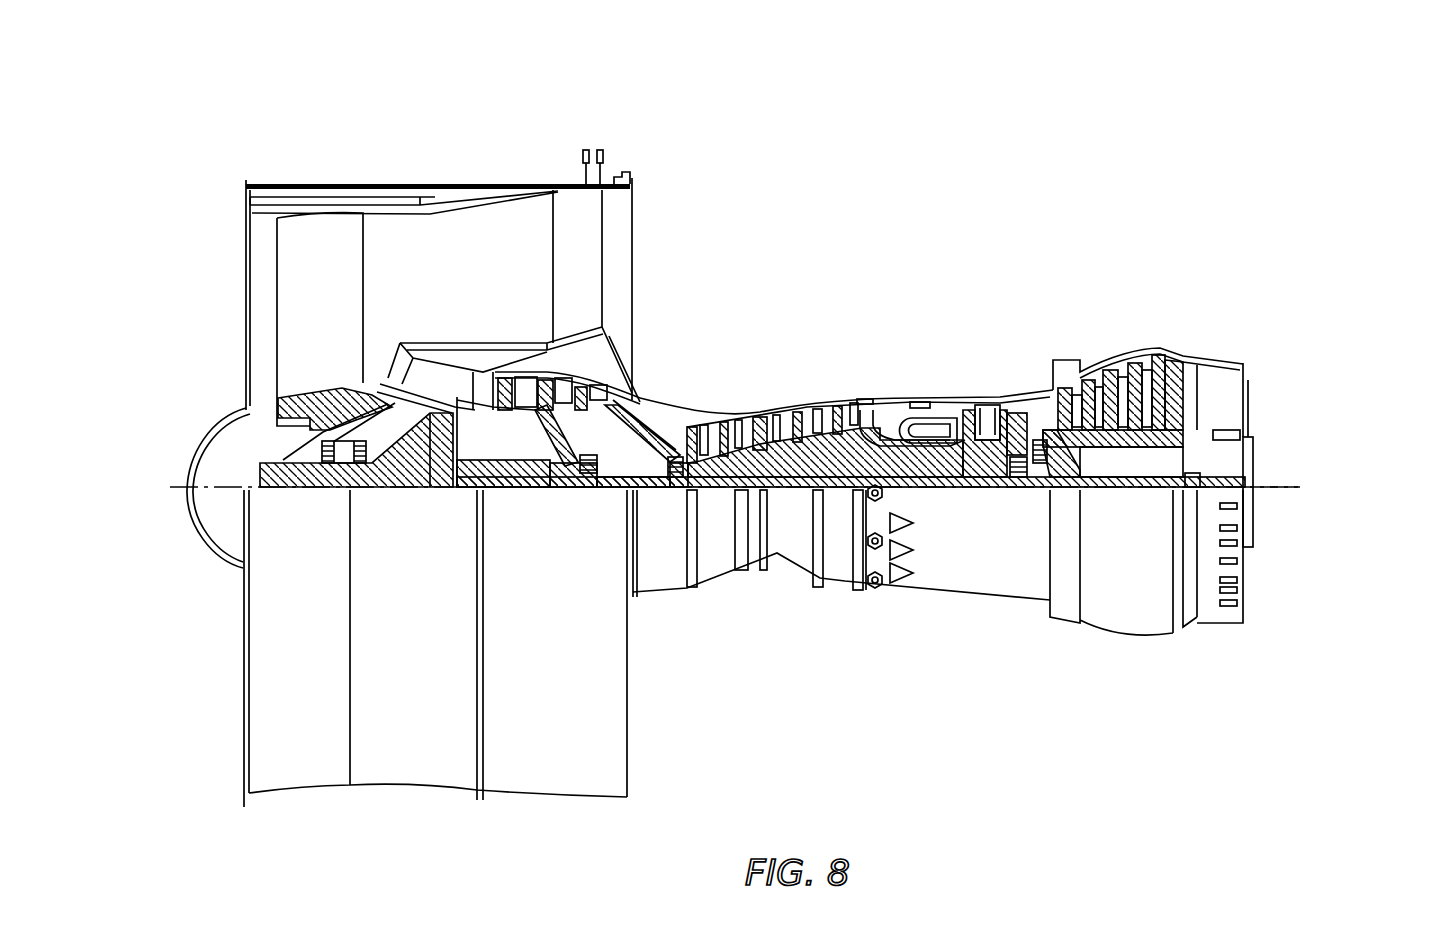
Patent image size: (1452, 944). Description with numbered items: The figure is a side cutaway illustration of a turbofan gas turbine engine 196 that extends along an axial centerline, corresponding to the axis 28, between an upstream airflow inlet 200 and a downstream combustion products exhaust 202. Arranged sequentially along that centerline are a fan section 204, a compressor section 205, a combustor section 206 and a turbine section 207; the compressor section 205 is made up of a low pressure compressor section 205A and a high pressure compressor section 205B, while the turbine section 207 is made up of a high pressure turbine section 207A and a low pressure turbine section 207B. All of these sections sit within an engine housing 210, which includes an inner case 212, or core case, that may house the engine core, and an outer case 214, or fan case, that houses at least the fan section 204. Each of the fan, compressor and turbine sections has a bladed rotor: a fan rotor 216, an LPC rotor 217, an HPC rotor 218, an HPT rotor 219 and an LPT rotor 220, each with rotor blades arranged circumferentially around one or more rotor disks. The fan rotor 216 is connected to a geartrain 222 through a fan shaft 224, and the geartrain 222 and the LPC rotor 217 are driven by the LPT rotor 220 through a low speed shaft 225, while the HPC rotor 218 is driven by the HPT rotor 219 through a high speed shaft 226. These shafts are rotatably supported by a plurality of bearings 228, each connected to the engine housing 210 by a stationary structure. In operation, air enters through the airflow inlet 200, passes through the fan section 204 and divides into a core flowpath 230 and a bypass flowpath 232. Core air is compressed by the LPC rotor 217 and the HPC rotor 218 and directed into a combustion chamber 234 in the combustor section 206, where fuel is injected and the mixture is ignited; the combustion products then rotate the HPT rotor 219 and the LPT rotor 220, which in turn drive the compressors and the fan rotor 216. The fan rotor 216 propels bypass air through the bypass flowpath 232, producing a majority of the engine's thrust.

The turbofan gas turbine engine 196 is at (168, 126).
The airflow inlet 200 is at (245, 288).
The fan section 204 is at (402, 168).
The compressor section 205 is at (840, 105).
The low pressure compressor section 205A is at (638, 152).
The high pressure compressor section 205B is at (838, 333).
The combustor section 206 is at (909, 369).
The turbine section 207 is at (1207, 272).
The high pressure turbine section 207A is at (1035, 335).
The low pressure turbine section 207B is at (1207, 335).
The combustion products exhaust 202 is at (1247, 383).
The engine housing 210 is at (660, 620).
The inner case 212 is at (838, 584).
The outer case 214 is at (590, 800).
The fan rotor 216 is at (270, 434).
The LPC rotor 217 is at (540, 434).
The HPC rotor 218 is at (803, 465).
The HPT rotor 219 is at (985, 463).
The LPT rotor 220 is at (1120, 437).
The geartrain 222 is at (440, 483).
The fan shaft 224 is at (277, 483).
The low speed shaft 225 is at (1157, 483).
The high speed shaft 226 is at (915, 468).
The bearings 228 is at (352, 466).
The core flowpath 230 is at (655, 408).
The bypass flowpath 232 is at (487, 295).
The combustion chamber 234 is at (917, 427).
The axis 28 is at (1290, 489).